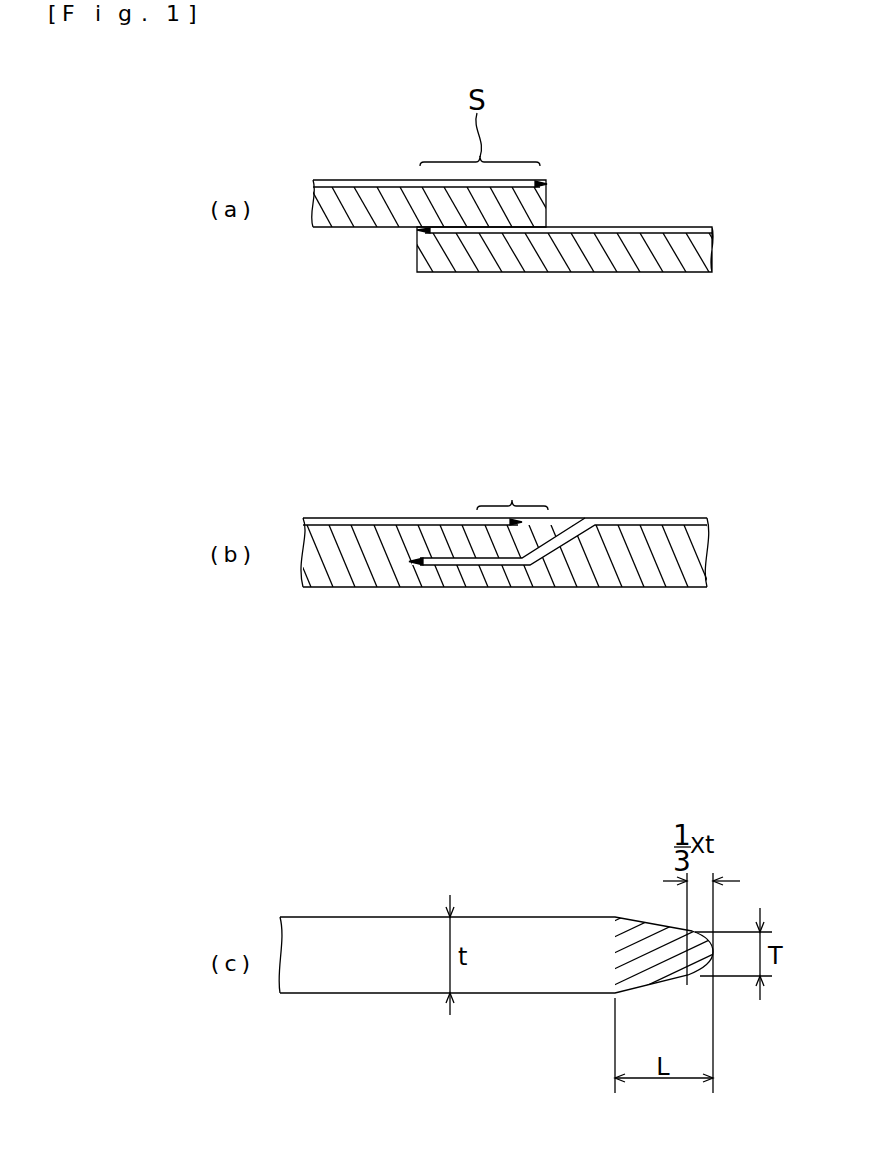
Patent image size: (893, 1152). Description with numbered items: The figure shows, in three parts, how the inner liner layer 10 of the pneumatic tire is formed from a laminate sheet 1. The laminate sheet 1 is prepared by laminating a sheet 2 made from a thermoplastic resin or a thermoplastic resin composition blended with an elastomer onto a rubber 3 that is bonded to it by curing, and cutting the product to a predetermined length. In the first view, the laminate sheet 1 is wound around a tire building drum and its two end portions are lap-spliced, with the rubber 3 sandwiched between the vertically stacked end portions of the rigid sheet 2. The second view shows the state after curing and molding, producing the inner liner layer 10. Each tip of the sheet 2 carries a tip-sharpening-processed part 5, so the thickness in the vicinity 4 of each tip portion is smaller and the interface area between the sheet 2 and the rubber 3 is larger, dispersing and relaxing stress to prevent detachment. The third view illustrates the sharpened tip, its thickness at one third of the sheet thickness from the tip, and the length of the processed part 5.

The laminate sheet 1 is at (400, 177).
The sheet made from thermoplastic resin or thermoplastic resin composition 2 is at (353, 180).
The rubber 3 is at (328, 232).
The vicinity of the tip portions 4 is at (515, 498).
The tip-sharpening-processed part 5 is at (546, 182).
The inner liner layer 10 is at (648, 590).